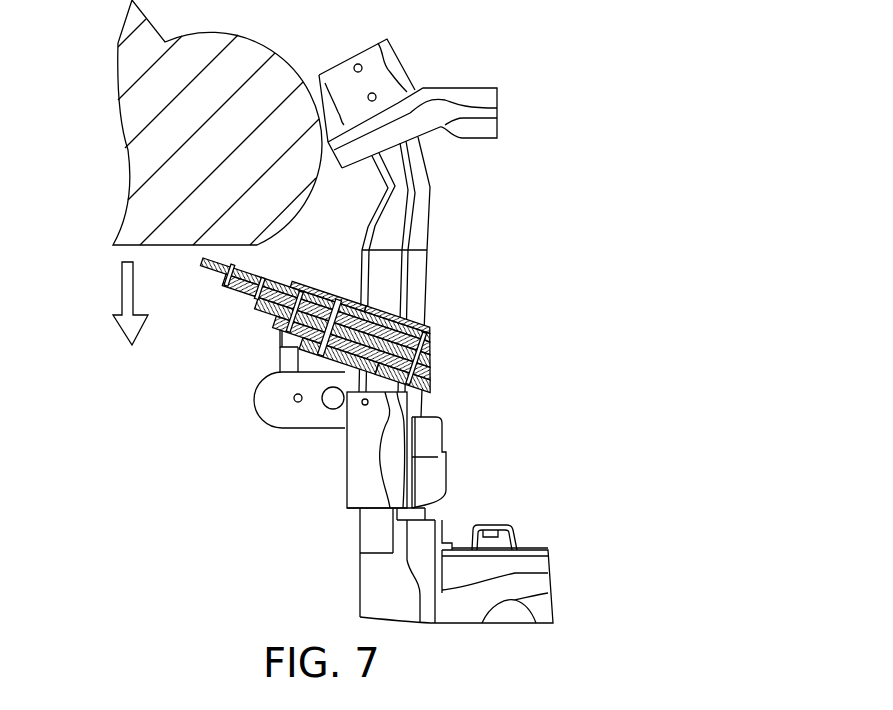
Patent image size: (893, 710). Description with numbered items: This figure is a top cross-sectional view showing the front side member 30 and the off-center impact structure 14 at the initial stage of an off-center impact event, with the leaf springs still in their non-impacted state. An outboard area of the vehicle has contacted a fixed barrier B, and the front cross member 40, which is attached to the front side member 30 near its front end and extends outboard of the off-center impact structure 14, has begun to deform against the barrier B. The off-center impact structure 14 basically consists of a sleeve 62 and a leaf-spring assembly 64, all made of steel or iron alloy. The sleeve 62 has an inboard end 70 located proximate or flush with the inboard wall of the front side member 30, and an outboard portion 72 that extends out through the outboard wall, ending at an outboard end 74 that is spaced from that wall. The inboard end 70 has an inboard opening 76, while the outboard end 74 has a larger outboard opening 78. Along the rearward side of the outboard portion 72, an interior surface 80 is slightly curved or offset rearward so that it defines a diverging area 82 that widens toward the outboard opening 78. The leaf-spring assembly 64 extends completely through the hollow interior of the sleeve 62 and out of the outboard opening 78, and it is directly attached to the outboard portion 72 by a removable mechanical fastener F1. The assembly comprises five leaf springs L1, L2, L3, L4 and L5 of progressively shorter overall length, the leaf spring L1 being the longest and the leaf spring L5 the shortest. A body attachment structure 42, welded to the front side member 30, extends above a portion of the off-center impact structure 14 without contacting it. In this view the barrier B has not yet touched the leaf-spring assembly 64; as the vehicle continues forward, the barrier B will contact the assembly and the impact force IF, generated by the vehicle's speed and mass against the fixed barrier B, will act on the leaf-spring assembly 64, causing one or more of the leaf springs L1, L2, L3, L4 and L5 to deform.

The fixed barrier B is at (211, 90).
The front cross member 40 is at (476, 85).
The front side member 30 is at (428, 216).
The off-center impact structure 14 is at (328, 319).
The sleeve 62 is at (328, 296).
The inboard end 70 is at (397, 319).
The inboard opening 76 is at (404, 378).
The leaf-spring assembly 64 is at (229, 275).
The outboard opening 78 is at (259, 288).
The outboard portion 72 is at (294, 311).
The mechanical fastener F1 is at (330, 327).
The leaf spring L1 is at (316, 300).
The leaf spring L2 is at (327, 314).
The leaf spring L3 is at (344, 332).
The leaf spring L4 is at (353, 348).
The leaf spring L5 is at (339, 356).
The outboard end 74 is at (258, 343).
The interior surface 80 is at (305, 350).
The diverging area 82 is at (281, 352).
The body attachment structure 42 is at (288, 398).
The impact force IF is at (121, 283).